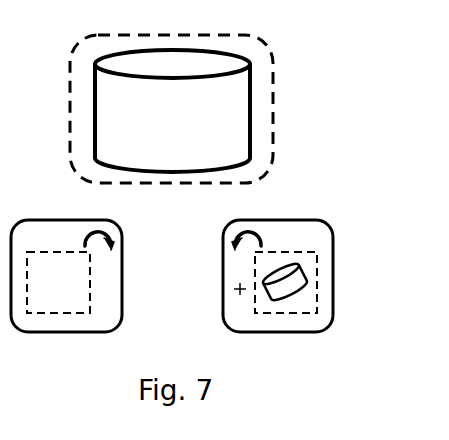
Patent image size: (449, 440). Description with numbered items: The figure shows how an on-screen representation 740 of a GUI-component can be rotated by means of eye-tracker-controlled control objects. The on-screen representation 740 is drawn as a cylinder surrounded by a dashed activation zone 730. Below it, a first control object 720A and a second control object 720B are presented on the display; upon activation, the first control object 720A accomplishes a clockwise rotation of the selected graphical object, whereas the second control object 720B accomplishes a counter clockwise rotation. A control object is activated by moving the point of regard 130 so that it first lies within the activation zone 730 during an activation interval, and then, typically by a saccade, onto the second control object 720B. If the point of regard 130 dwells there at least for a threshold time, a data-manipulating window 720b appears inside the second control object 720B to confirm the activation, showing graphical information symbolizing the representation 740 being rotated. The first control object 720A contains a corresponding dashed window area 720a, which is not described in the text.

The activation zone 730 is at (232, 37).
The on-screen representation 740 is at (252, 113).
The first control object 720A is at (42, 220).
The first control dashed target area 720a is at (42, 312).
The second control object 720B is at (290, 220).
The data-manipulating window 720b is at (317, 280).
The point of regard 130 is at (234, 292).